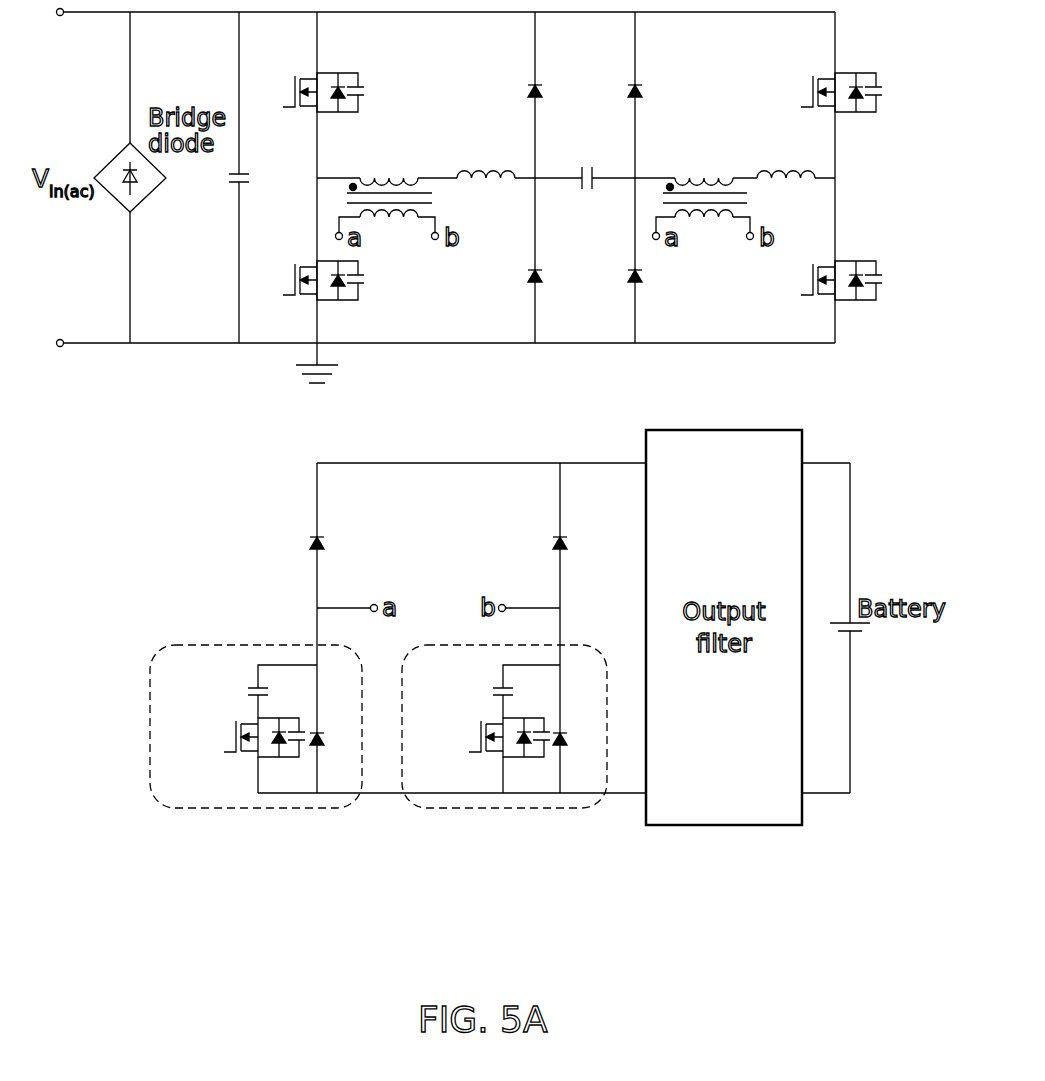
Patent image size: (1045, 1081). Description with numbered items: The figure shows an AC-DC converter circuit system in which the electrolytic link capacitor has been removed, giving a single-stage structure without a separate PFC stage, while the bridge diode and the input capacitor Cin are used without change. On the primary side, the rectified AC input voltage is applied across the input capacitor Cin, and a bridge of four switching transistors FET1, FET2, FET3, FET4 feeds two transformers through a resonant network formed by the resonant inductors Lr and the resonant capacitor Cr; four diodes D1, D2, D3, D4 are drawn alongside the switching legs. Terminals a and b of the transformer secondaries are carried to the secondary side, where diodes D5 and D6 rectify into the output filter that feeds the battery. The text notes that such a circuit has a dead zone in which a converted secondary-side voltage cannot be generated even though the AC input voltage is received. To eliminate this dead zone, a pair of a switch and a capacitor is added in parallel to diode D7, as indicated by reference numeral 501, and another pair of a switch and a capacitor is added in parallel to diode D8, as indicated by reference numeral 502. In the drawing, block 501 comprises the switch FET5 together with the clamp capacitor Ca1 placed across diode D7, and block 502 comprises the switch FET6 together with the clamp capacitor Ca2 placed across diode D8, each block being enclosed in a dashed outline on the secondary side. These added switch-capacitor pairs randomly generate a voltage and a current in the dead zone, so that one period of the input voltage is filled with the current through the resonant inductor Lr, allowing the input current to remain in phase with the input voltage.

The pair of switch and capacitor 501 is at (256, 747).
The pair of switch and capacitor 502 is at (504, 747).
The first switching transistor FET1 is at (353, 92).
The second switching transistor FET2 is at (353, 280).
The third switching transistor FET3 is at (873, 92).
The fourth switching transistor FET4 is at (873, 280).
The first clamp transistor FET5 is at (229, 737).
The second clamp transistor FET6 is at (477, 737).
The first diode D1 is at (552, 95).
The second diode D2 is at (552, 280).
The third diode D3 is at (652, 280).
The fourth diode D4 is at (652, 95).
The fifth diode D5 is at (334, 547).
The sixth diode D6 is at (577, 547).
The diode 7 D7 is at (334, 743).
The diode 8 D8 is at (577, 743).
The input capacitor Cin is at (257, 177).
The resonant capacitor Cr is at (587, 163).
The resonant inductor Lr is at (636, 158).
The first clamp capacitor Ca1 is at (279, 696).
The second clamp capacitor Ca2 is at (524, 696).